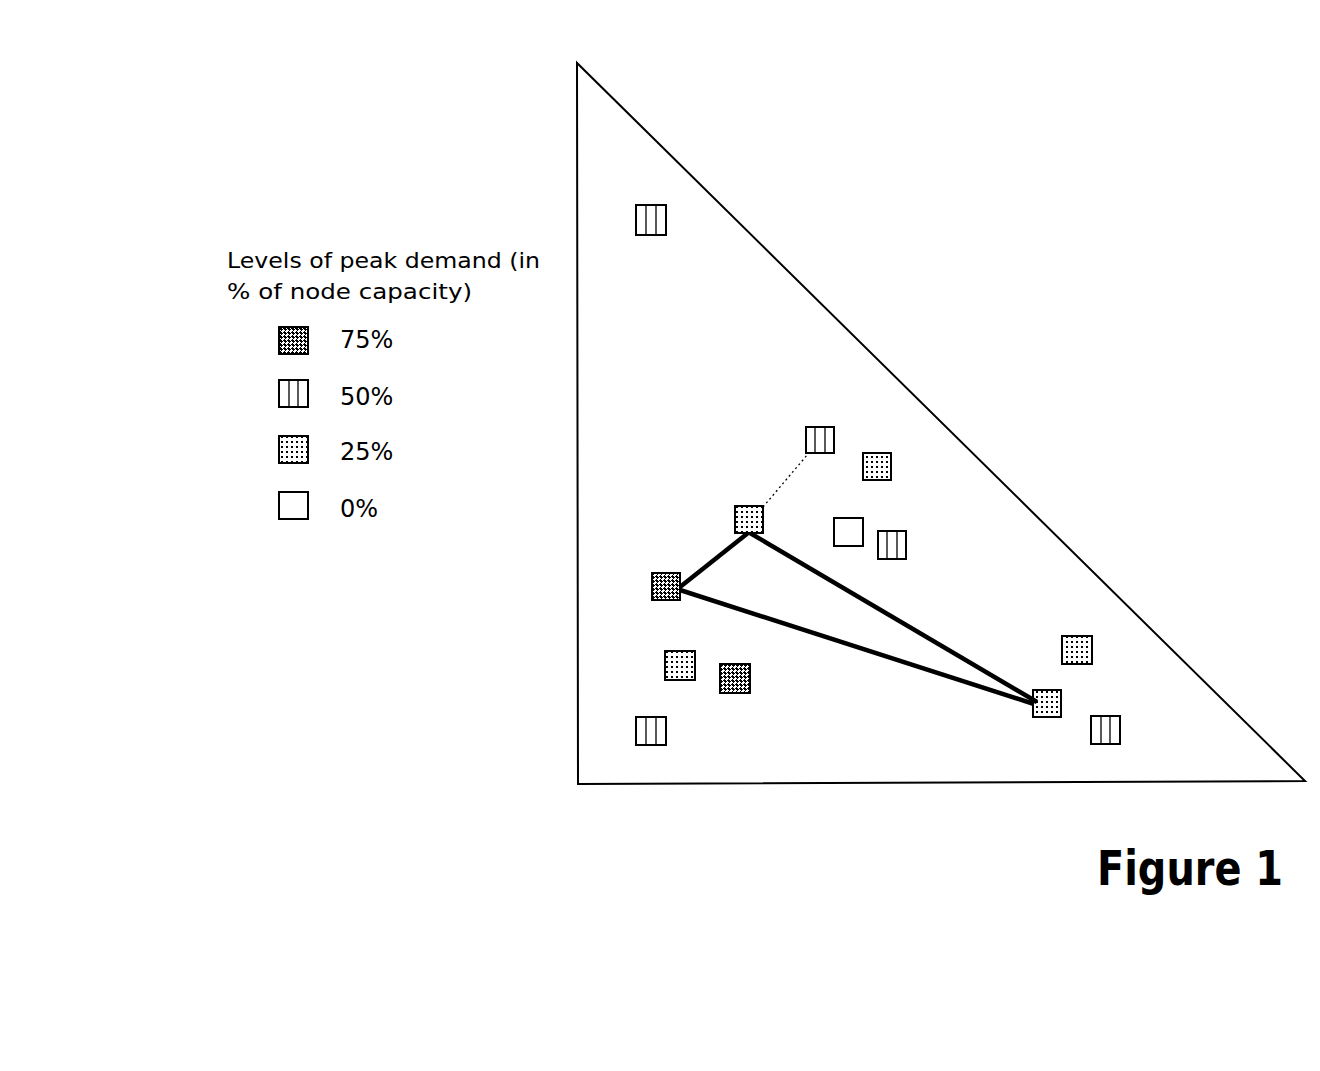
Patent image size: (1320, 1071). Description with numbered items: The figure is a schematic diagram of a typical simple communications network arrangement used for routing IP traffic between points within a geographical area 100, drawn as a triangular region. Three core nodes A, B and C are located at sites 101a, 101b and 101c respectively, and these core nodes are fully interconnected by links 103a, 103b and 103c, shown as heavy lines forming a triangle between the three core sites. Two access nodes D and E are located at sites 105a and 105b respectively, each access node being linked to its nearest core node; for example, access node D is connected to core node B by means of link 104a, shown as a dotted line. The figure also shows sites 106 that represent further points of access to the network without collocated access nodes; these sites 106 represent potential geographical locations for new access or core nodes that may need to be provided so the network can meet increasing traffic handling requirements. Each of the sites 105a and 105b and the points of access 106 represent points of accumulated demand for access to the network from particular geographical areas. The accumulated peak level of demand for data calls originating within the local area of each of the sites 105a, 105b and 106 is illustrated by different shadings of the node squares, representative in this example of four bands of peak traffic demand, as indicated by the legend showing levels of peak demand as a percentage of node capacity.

The geographical area 100 is at (323, 668).
The site of core node A 101a is at (656, 600).
The site of core node B 101b is at (735, 518).
The site of core node C 101c is at (1045, 690).
The link 103a is at (708, 558).
The link 103b is at (907, 623).
The link 103c is at (820, 638).
The link 104a is at (788, 480).
The site of access node D 105a is at (827, 426).
The site of access node E 105b is at (636, 732).
The sites 106 is at (1120, 729).